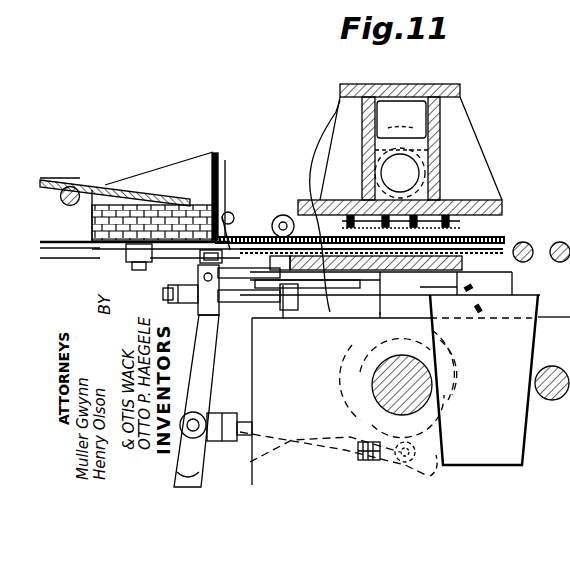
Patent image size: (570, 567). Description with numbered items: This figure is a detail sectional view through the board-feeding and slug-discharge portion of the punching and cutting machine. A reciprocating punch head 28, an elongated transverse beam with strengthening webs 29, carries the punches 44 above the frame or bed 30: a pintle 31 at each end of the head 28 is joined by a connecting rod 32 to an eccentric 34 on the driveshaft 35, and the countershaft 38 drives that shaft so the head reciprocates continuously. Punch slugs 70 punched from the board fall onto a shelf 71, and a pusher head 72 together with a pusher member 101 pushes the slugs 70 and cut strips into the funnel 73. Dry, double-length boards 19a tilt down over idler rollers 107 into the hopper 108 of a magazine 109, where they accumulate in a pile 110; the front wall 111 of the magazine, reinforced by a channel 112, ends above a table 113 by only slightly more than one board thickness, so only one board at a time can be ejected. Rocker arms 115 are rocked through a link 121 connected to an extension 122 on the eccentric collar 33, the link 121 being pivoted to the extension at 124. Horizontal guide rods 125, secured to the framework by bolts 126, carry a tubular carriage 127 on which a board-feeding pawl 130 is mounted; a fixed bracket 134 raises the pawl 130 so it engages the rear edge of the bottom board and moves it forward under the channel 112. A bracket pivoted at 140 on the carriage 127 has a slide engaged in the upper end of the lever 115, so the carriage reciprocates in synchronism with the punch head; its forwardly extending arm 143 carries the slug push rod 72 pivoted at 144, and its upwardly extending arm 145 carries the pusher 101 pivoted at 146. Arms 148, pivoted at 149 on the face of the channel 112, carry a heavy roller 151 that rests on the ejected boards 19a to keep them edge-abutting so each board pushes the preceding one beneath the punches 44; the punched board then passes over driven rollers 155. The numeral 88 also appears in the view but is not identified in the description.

The double-length board 19a is at (87, 183).
The punch head 28 is at (488, 208).
The strengthening webs 29 is at (435, 132).
The bed 30 is at (502, 289).
The pintle 31 is at (407, 173).
The connecting rod 32 is at (373, 313).
The eccentric collar 33 is at (452, 400).
The eccentric 34 is at (355, 371).
The driveshaft 35 is at (372, 403).
The countershaft 38 is at (552, 400).
The punch 44 is at (462, 226).
The punch slugs 70 is at (471, 289).
The shelf 71 is at (462, 284).
The pusher head 72 is at (336, 278).
The funnel 73 is at (446, 451).
The rod 88 is at (560, 99).
The pusher member 101 is at (316, 126).
The idler rollers 107 is at (68, 205).
The hopper 108 is at (150, 180).
The magazine 109 is at (159, 168).
The pile of boards 110 is at (120, 237).
The front wall 111 is at (212, 166).
The channel 112 is at (221, 207).
The table 113 is at (182, 255).
The rocker arm 115 is at (203, 385).
The link 121 is at (206, 448).
The extension 122 is at (428, 476).
The pivot 124 is at (372, 462).
The horizontal guide rods 125 is at (262, 312).
The bolts 126 is at (212, 442).
The tubular carriage 127 is at (182, 291).
The board-feeding pawl 130 is at (124, 259).
The fixed bracket 134 is at (210, 300).
The pivot 140 is at (216, 308).
The forwardly extending arm 143 is at (256, 296).
The pivot 144 is at (240, 218).
The upwardly extending arm 145 is at (232, 216).
The pivot 146 is at (212, 198).
The arms 148 is at (280, 210).
The pivot 149 is at (225, 172).
The heavy roller 151 is at (295, 226).
The driven rollers 155 is at (531, 242).